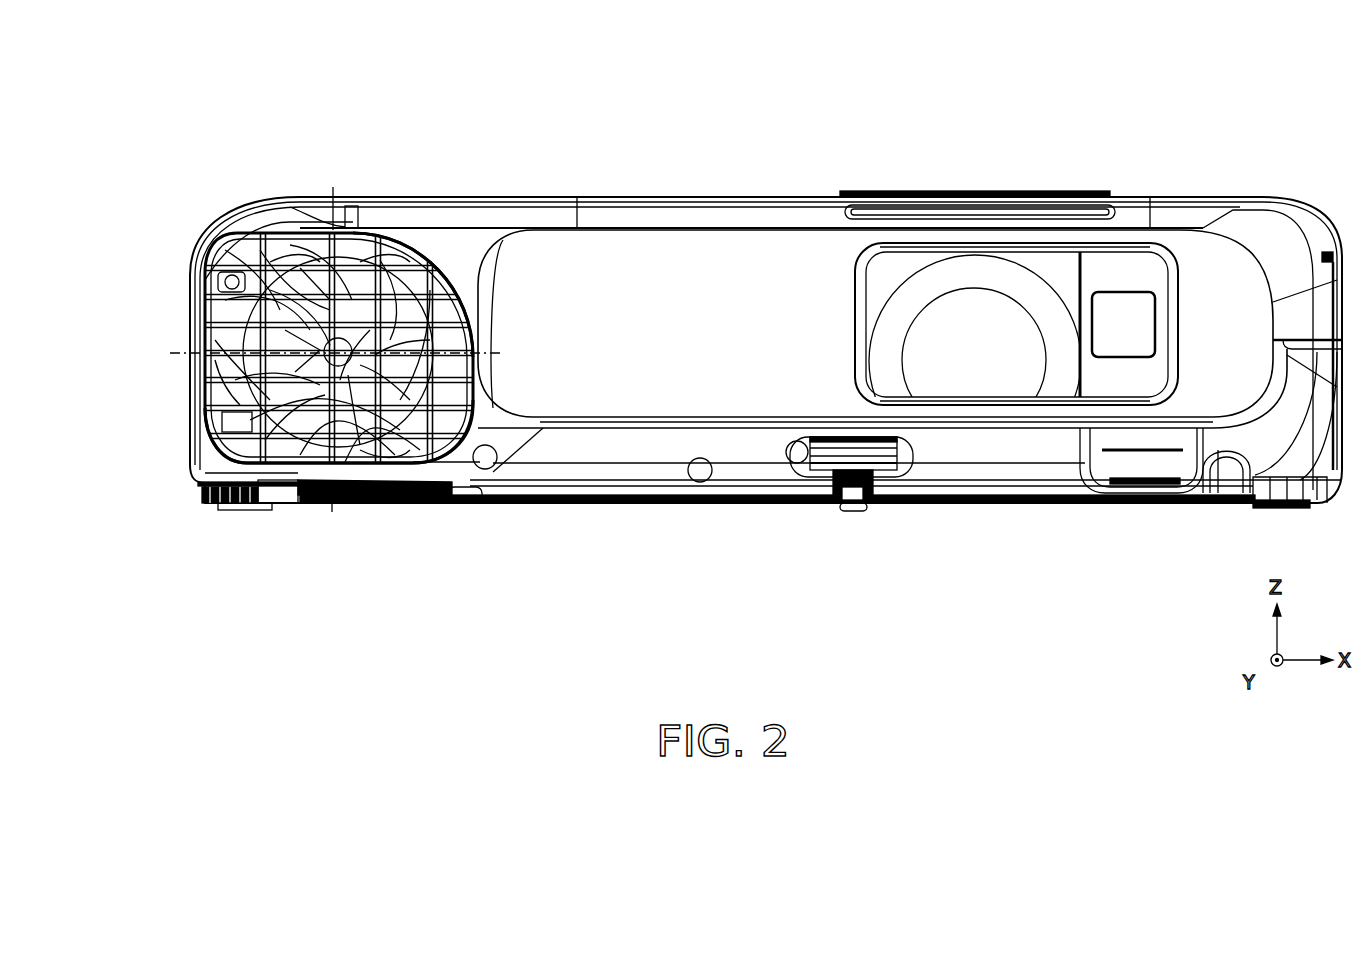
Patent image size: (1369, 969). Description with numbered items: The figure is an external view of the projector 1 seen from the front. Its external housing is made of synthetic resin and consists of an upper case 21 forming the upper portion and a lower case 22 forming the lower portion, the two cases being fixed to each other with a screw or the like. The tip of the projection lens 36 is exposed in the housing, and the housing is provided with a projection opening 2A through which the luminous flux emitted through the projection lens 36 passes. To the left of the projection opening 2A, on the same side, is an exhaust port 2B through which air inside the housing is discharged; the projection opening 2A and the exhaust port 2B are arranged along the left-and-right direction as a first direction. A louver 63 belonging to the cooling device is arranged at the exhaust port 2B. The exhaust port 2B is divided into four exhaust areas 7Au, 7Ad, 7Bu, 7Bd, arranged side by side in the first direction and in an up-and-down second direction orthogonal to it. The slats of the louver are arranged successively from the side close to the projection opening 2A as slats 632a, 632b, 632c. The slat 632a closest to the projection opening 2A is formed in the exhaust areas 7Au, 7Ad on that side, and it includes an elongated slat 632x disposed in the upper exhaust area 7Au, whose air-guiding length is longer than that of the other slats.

The projector 1 is at (1278, 144).
The projection opening 2A is at (883, 283).
The exhaust port 2B is at (370, 240).
The upper case 21 is at (618, 213).
The lower case 22 is at (617, 462).
The projection lens 36 is at (980, 363).
The louver 63 is at (288, 488).
The elongated slat 632x is at (428, 250).
The slat 632a is at (424, 500).
The slat 632b is at (348, 500).
The slat 632c is at (304, 505).
The upper right exhaust area 7Au is at (393, 265).
The lower right exhaust area 7Ad is at (385, 505).
The upper left exhaust area 7Bu is at (303, 255).
The lower left exhaust area 7Bd is at (207, 380).